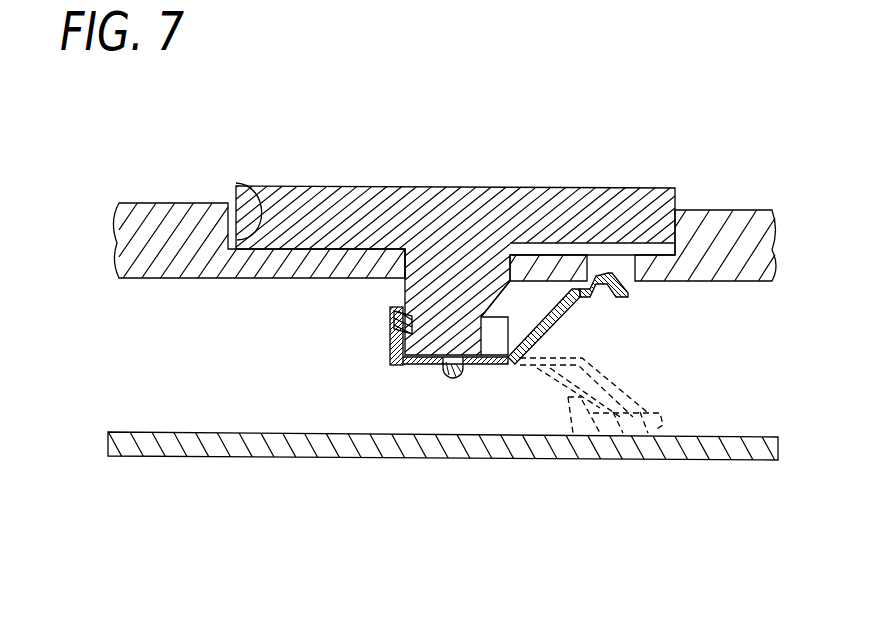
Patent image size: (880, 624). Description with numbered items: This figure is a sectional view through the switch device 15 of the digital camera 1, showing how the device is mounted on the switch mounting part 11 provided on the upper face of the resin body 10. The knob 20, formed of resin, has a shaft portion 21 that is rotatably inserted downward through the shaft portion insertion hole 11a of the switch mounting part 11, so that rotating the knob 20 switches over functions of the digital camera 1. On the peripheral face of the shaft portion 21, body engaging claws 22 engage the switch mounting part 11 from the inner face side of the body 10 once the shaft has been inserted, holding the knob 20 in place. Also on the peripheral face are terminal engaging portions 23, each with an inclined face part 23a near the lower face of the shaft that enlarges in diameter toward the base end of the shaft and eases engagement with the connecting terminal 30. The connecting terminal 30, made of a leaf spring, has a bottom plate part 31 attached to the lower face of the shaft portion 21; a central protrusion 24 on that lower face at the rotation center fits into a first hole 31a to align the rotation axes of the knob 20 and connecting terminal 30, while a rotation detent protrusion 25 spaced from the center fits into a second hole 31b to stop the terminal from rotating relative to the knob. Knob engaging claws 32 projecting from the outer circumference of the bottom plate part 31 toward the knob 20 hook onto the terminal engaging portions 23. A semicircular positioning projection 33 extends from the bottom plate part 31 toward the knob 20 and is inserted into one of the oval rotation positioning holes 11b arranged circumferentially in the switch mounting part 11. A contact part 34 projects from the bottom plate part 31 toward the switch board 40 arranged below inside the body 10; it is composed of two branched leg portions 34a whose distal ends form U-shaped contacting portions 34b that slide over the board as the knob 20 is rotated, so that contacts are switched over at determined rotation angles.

The digital camera 1 is at (756, 161).
The body 10 is at (181, 216).
The switch mounting part 11 is at (233, 183).
The shaft portion insertion hole 11a is at (403, 285).
The rotation positioning holes 11b is at (632, 281).
The switch device 15 is at (558, 156).
The knob 20 is at (411, 200).
The shaft portion 21 is at (512, 302).
The body engaging claws 22 is at (513, 288).
The terminal engaging portions 23 is at (390, 330).
The inclined face part 23a is at (390, 363).
The central protrusion 24 is at (477, 370).
The rotation detent protrusion 25 is at (483, 370).
The connecting terminal 30 is at (445, 375).
The bottom plate part 31 is at (517, 368).
The first hole 31a is at (457, 368).
The second hole 31b is at (477, 370).
The knob engaging claws 32 is at (390, 315).
The positioning projection 33 is at (578, 292).
The contact part 34 is at (573, 433).
The leg portions 34a is at (600, 433).
The contacting portions 34b is at (648, 433).
The switch board 40 is at (222, 455).